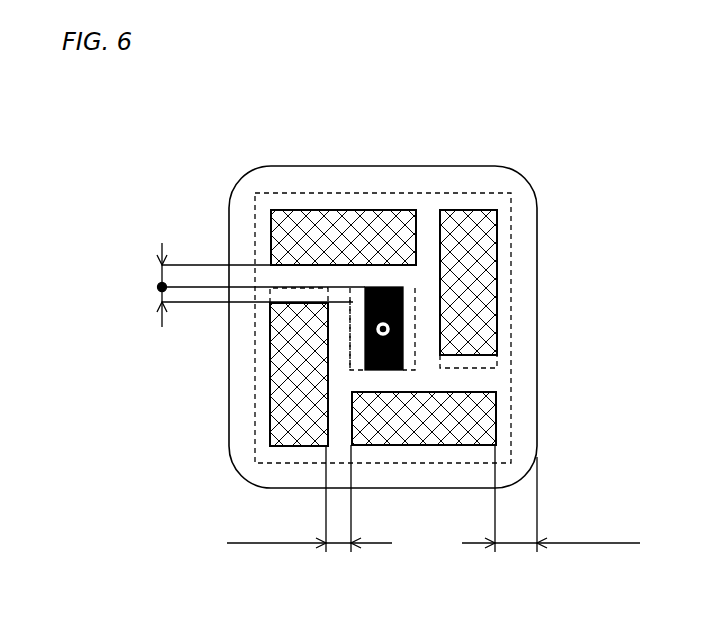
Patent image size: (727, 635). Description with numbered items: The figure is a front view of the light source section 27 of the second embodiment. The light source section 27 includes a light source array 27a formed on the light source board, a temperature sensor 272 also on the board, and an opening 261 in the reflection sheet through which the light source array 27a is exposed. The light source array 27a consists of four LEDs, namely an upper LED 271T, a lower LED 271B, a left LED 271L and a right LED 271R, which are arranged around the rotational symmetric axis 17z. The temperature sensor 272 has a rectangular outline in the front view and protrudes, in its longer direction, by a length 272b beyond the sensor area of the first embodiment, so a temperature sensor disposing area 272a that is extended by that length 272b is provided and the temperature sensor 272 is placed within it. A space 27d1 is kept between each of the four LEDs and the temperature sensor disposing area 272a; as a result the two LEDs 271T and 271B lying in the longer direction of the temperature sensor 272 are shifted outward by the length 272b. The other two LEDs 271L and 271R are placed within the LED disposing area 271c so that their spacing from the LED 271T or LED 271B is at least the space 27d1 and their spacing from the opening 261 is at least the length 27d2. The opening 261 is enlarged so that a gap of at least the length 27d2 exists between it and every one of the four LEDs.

The light source section 27 is at (200, 153).
The light source array 27a is at (253, 233).
The LED 271T is at (348, 228).
The LED 271R is at (487, 230).
The LED 271L is at (290, 421).
The LED 271B is at (420, 447).
The LED disposing area 271c is at (267, 298).
The temperature sensor 272 is at (403, 318).
The temperature sensor disposing area 272a is at (350, 362).
The length 272b is at (160, 292).
The symmetric axis 17z is at (390, 333).
The opening 261 is at (538, 422).
The space 27d1 is at (160, 273).
The length 27d2 is at (551, 498).